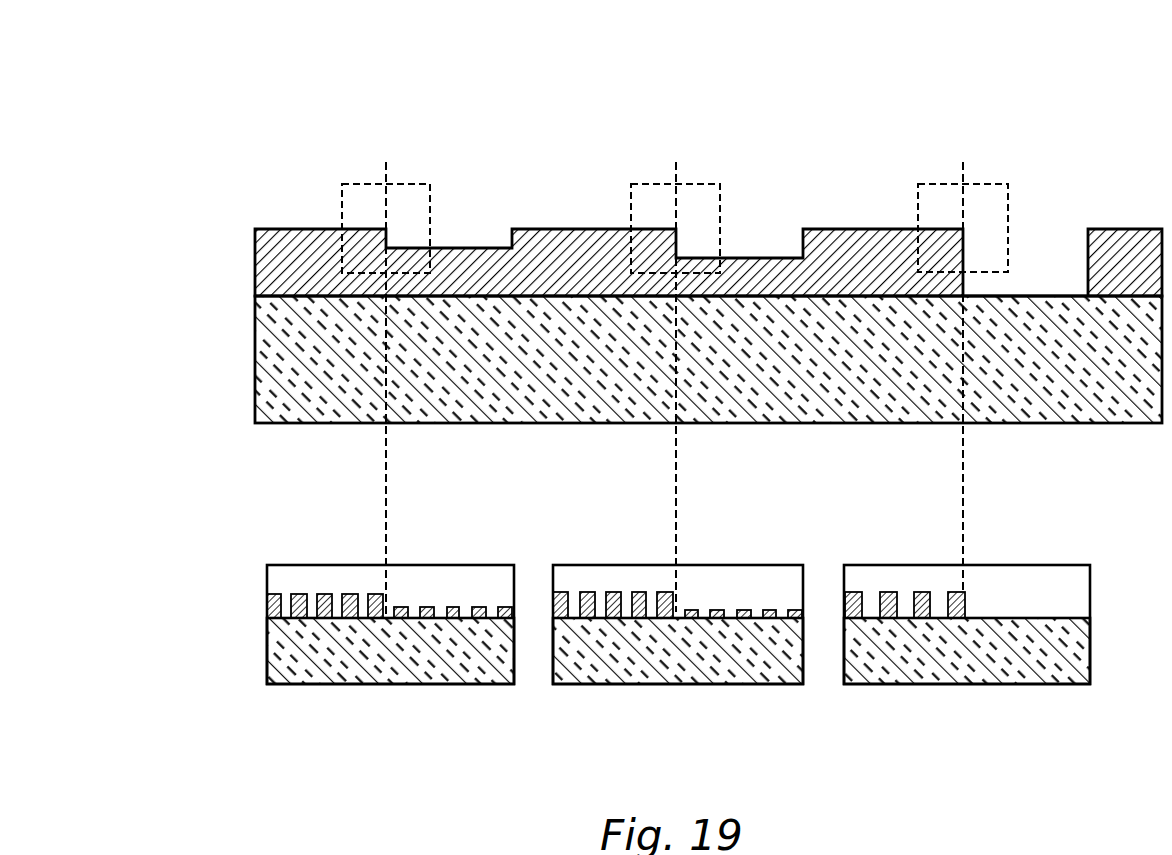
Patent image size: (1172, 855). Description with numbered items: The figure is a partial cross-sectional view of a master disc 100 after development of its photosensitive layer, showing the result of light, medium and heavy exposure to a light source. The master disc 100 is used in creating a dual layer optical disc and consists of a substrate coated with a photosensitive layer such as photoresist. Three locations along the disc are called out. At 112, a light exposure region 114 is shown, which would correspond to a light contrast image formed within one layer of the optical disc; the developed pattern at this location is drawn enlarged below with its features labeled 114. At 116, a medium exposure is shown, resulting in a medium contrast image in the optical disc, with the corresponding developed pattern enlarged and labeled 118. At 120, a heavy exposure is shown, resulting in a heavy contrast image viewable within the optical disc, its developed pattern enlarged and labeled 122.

The master disc 100 is at (286, 110).
The light exposure location 112 is at (416, 178).
The light exposure region 114 is at (415, 564).
The medium exposure location 116 is at (706, 177).
The second pattern of pillars 118 is at (585, 564).
The heavy exposure location 120 is at (994, 177).
The third pattern of pillars 122 is at (875, 564).